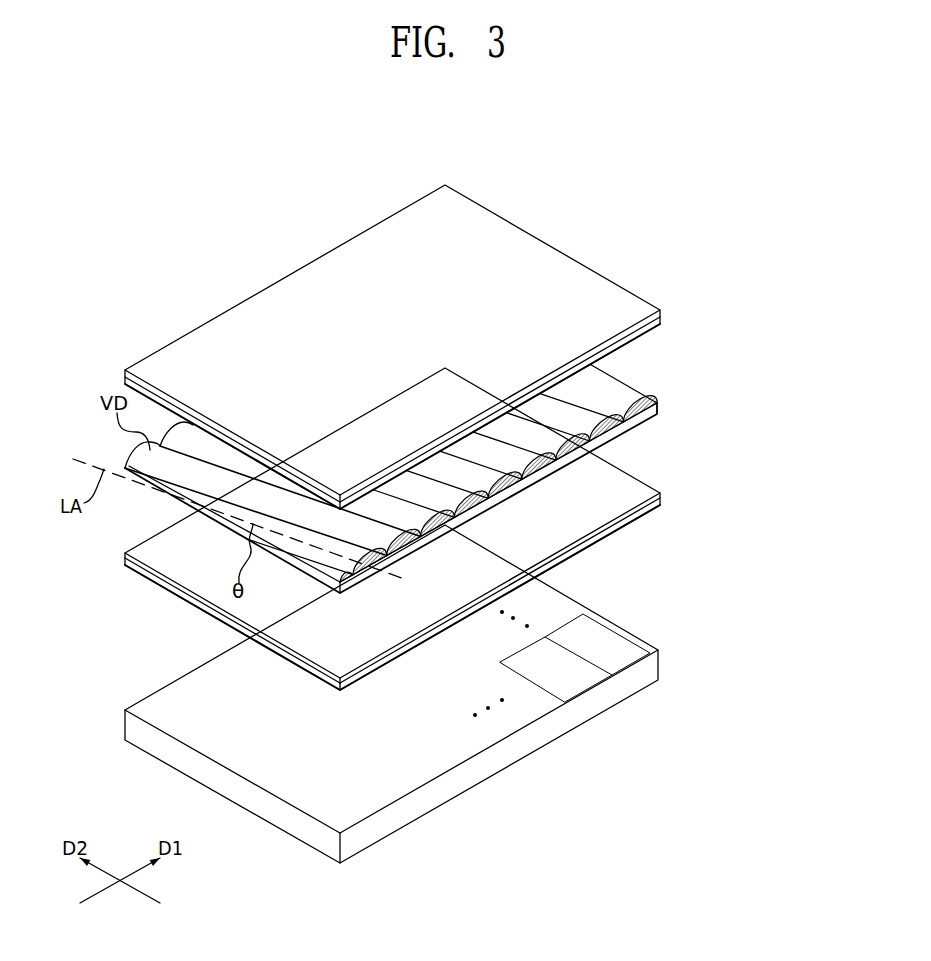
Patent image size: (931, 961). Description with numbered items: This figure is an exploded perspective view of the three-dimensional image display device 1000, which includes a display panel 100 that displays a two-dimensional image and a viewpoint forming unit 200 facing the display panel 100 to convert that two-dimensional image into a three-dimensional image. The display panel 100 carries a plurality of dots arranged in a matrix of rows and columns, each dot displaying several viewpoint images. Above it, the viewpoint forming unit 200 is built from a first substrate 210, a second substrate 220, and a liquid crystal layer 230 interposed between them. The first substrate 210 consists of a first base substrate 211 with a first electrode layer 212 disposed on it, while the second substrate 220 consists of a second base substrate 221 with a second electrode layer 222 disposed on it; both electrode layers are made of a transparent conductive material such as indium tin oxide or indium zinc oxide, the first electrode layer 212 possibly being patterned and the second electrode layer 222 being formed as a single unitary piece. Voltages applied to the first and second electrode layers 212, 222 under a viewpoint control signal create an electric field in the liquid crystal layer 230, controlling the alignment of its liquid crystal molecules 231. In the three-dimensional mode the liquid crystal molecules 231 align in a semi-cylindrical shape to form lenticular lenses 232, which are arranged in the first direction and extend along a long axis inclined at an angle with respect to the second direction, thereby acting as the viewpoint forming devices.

The three-dimensional image display device 1000 is at (642, 160).
The display panel 100 is at (661, 666).
The viewpoint forming unit 200 is at (783, 313).
The first substrate 210 is at (735, 478).
The first base substrate 211 is at (662, 503).
The first electrode layer 212 is at (662, 491).
The second substrate 220 is at (735, 297).
The second base substrate 221 is at (664, 311).
The second electrode layer 222 is at (662, 322).
The liquid crystal layer 230 is at (662, 370).
The liquid crystal molecules 231 is at (660, 404).
The lenticular lenses 232 is at (660, 414).